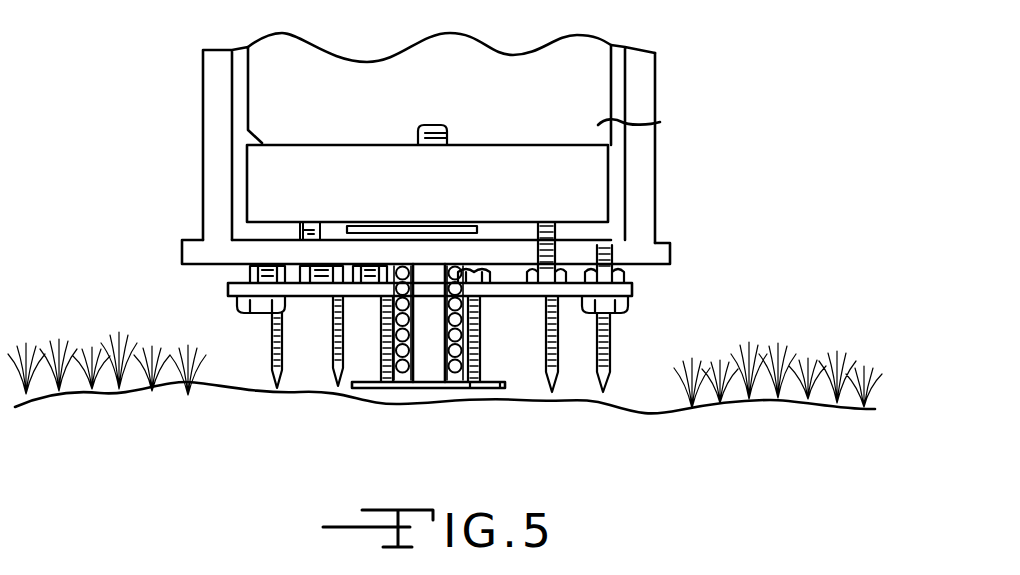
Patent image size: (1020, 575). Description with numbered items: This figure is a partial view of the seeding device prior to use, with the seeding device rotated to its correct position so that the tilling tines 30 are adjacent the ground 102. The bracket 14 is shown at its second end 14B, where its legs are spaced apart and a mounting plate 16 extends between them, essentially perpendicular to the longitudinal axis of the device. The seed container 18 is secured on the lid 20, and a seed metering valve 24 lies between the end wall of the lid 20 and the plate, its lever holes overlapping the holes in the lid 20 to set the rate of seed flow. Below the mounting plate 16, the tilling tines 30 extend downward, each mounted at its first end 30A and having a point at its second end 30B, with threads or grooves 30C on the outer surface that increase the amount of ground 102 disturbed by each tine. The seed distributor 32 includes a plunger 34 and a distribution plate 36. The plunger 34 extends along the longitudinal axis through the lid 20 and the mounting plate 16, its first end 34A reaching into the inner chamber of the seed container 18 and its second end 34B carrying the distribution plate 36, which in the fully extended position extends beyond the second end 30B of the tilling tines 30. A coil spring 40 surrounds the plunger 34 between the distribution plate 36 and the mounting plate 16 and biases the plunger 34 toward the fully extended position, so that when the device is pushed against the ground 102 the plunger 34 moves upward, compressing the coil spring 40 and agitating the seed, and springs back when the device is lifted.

The bracket 14 is at (643, 72).
The second end of bracket 14B is at (647, 175).
The mounting plate 16 is at (663, 251).
The seed container 18 is at (660, 122).
The lid 20 is at (260, 183).
The seed metering valve 24 is at (382, 226).
The tilling tines 30 is at (627, 320).
The first end of tilling tine 30A is at (562, 308).
The second end of tilling tine 30B is at (617, 385).
The threads or grooves 30C is at (613, 340).
The seed distributor 32 is at (442, 264).
The plunger 34 is at (430, 306).
The first end of plunger 34A is at (432, 122).
The second end of plunger 34B is at (428, 393).
The distribution plate 36 is at (485, 392).
The coil spring 40 is at (402, 268).
The ground 102 is at (40, 396).